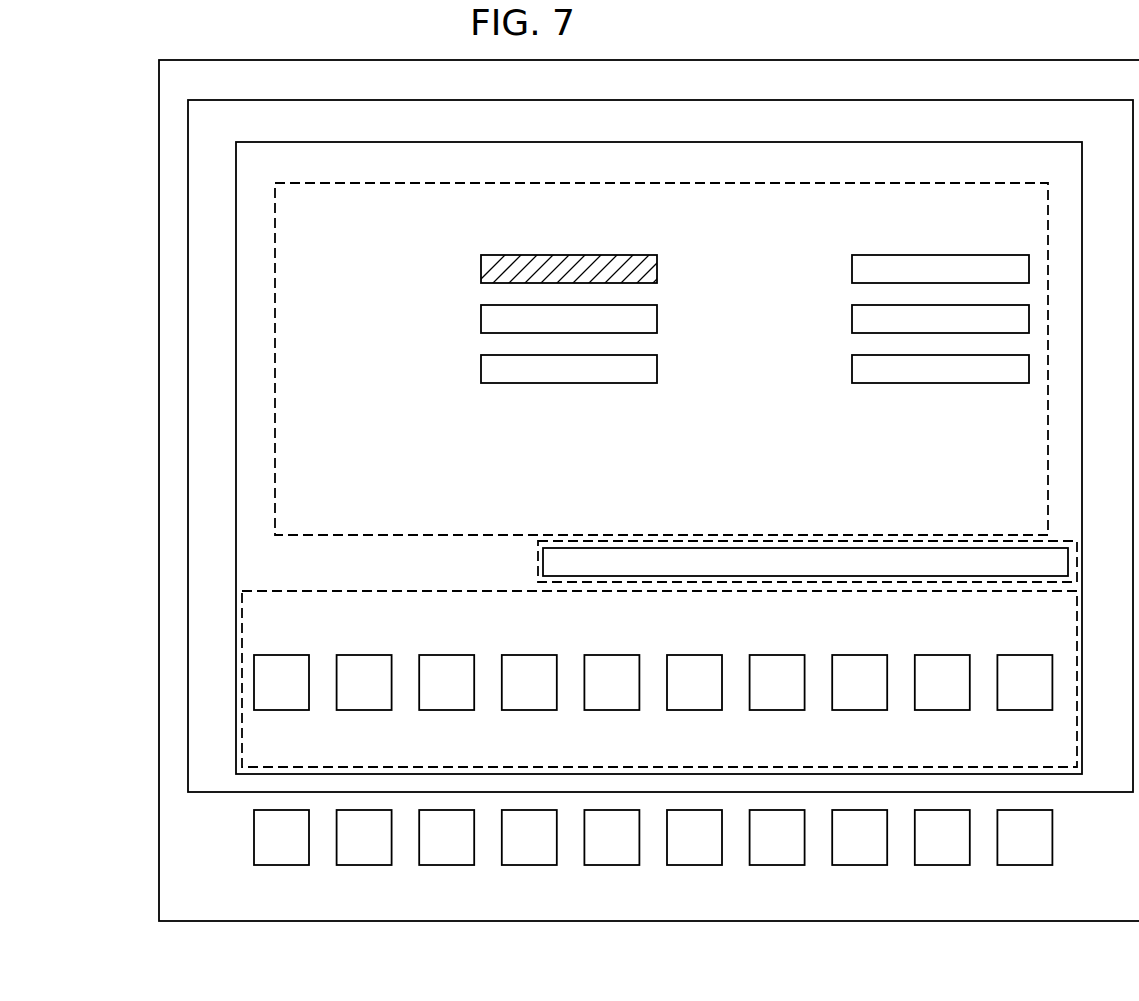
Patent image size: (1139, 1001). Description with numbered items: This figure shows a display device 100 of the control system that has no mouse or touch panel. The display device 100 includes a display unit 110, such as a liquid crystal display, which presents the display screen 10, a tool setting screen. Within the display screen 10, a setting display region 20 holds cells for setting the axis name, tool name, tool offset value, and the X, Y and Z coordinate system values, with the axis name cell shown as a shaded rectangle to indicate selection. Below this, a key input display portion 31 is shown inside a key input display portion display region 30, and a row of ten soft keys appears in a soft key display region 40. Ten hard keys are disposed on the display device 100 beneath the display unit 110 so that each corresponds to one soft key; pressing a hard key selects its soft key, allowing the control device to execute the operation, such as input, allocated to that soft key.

The display device 100 is at (660, 60).
The display unit 110 is at (660, 100).
The display screen 10 is at (660, 142).
The setting display region 20 is at (662, 183).
The key input display portion display region 30 is at (538, 563).
The key input display portion 31 is at (1068, 561).
The soft key display region 40 is at (300, 591).